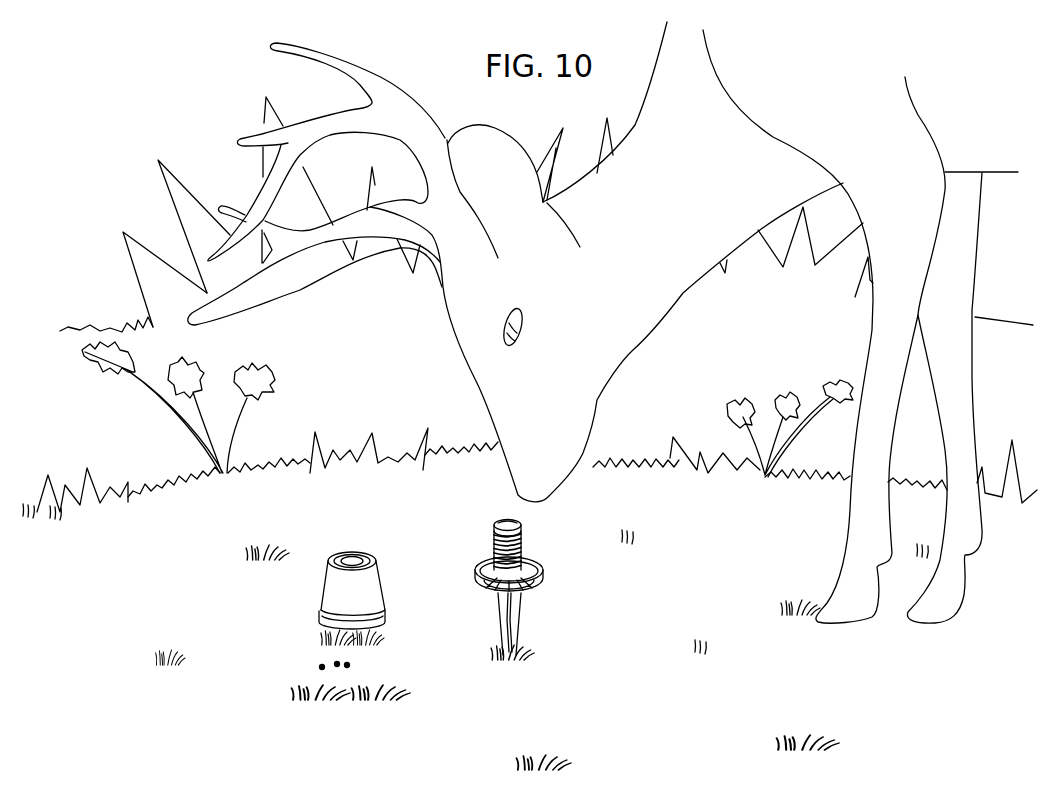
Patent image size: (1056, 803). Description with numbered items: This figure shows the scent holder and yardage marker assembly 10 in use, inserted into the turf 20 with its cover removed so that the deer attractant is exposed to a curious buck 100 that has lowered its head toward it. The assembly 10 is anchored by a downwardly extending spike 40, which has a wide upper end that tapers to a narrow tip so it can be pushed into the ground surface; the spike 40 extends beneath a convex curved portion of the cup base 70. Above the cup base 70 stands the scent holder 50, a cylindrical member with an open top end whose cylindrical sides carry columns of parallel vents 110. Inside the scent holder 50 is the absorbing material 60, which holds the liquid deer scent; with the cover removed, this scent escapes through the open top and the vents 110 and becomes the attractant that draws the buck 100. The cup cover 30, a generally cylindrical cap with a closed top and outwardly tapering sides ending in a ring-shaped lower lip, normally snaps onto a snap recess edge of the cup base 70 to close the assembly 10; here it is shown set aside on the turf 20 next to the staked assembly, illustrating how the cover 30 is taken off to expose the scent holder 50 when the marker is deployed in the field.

The scent holder and yardage marker assembly 10 is at (557, 647).
The turf 20 is at (752, 582).
The cup cover 30 is at (332, 590).
The spike 40 is at (517, 643).
The scent holder 50 is at (522, 535).
The absorbing material 60 is at (500, 520).
The cup base 70 is at (543, 577).
The buck 100 is at (712, 195).
The vents 110 is at (500, 548).